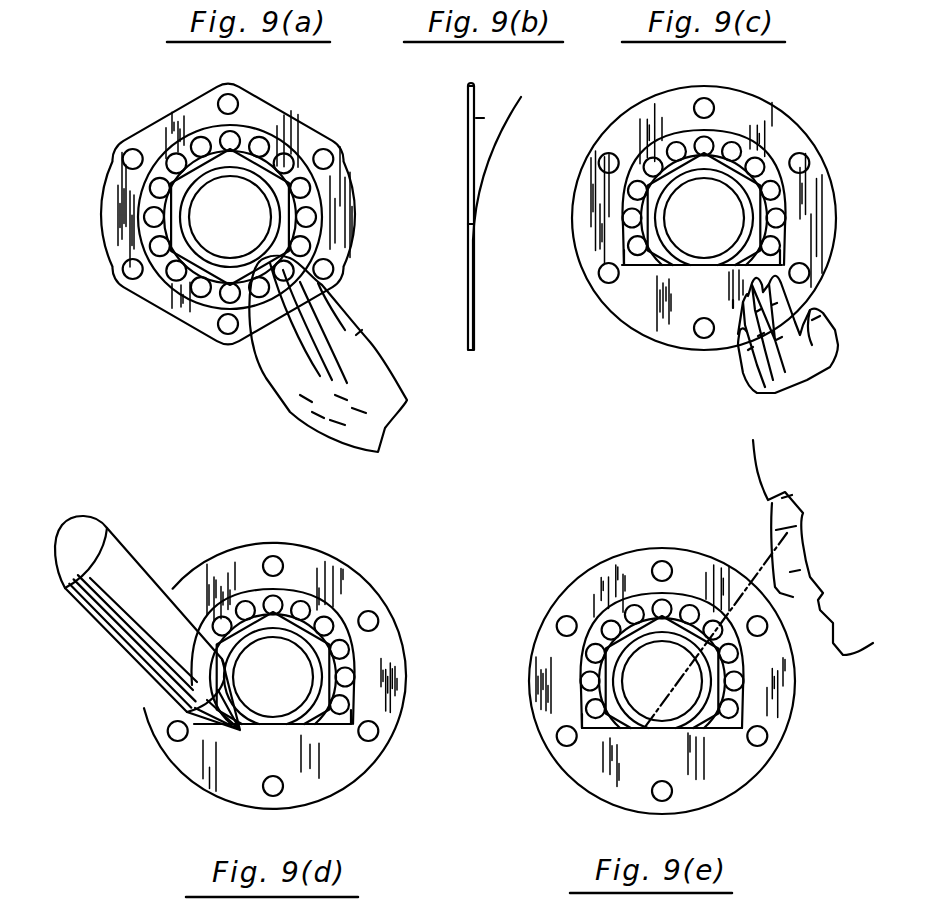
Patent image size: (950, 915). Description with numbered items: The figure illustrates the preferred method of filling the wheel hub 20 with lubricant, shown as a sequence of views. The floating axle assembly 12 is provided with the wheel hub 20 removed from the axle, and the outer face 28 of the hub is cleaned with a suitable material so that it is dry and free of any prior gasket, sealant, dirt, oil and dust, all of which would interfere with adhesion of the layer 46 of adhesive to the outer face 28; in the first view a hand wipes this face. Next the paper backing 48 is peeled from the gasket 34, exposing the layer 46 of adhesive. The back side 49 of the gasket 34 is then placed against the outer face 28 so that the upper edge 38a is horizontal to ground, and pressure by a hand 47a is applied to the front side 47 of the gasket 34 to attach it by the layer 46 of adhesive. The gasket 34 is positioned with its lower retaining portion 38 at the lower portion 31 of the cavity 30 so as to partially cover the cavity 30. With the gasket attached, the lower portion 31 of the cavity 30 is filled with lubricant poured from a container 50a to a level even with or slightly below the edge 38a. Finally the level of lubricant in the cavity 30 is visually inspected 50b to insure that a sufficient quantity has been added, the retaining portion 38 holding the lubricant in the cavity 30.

In FIG. 9A, the floating axle assembly 12 is at (141, 321).
In FIG. 9A, the wheel hub 20 is at (149, 105).
In FIG. 9D, the wheel hub 20 is at (377, 565).
In FIG. 9A, the outer face 28 is at (188, 320).
In FIG. 9C, the cavity 30 is at (773, 160).
In FIG. 9D, the cavity 30 is at (363, 668).
In FIG. 9E, the cavity 30 is at (749, 687).
In FIG. 9C, the lower portion 31 is at (776, 250).
In FIG. 9D, the lower portion 31 is at (323, 709).
In FIG. 9B, the gasket 34 is at (472, 364).
In FIG. 9C, the gasket 34 is at (608, 322).
In FIG. 9D, the gasket 34 is at (376, 790).
In FIG. 9C, the lower retaining portion 38 is at (698, 272).
In FIG. 9D, the lower retaining portion 38 is at (260, 761).
In FIG. 9E, the lower retaining portion 38 is at (629, 764).
In FIG. 9C, the upper edge 38a is at (660, 268).
In FIG. 9D, the upper edge 38a is at (250, 727).
In FIG. 9E, the upper edge 38a is at (678, 730).
In FIG. 9B, the layer of adhesive 46 is at (475, 92).
In FIG. 9B, the front side 47 is at (449, 218).
In FIG. 9C, the front side 47 is at (732, 308).
In FIG. 9C, the hand 47a is at (810, 346).
In FIG. 9B, the paper backing 48 is at (504, 135).
In FIG. 9B, the back side 49 is at (495, 112).
In FIG. 9D, the container 50a is at (132, 588).
In FIG. 9E, the visual inspection 50b is at (755, 577).